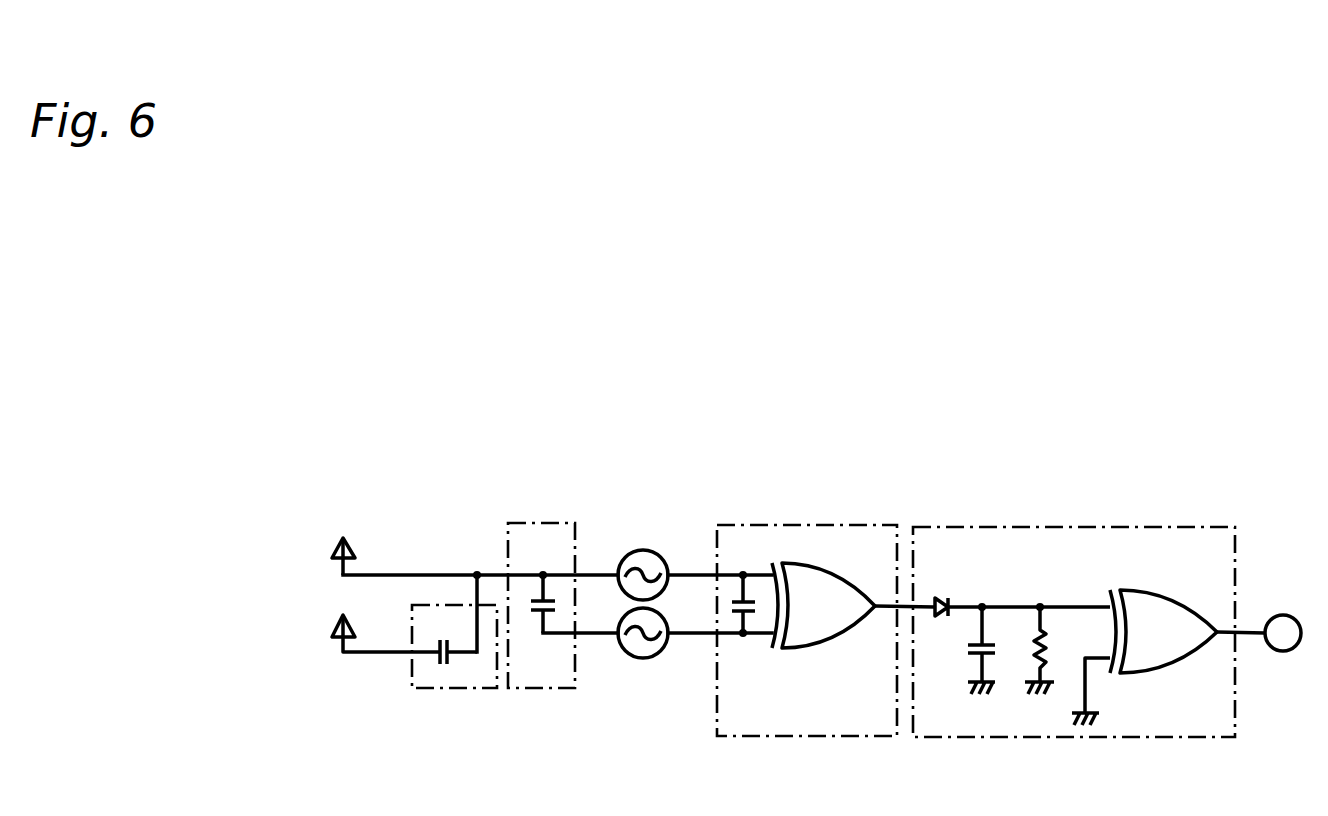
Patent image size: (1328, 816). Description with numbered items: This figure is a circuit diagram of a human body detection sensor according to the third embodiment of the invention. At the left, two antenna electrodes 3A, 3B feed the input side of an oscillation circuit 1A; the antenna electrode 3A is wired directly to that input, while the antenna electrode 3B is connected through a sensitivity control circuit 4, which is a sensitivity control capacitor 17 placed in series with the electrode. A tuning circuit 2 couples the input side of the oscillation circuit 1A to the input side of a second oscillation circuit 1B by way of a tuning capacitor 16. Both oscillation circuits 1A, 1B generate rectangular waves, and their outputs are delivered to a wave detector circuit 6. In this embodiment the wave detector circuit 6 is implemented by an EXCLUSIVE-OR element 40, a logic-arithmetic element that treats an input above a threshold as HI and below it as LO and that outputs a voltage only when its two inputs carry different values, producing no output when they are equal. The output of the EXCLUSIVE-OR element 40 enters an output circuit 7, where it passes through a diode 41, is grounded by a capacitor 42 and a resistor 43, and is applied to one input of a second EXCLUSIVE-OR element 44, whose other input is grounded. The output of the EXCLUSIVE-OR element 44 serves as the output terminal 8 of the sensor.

The oscillation circuit 1A is at (645, 550).
The oscillation circuit 1B is at (645, 659).
The tuning circuit 2 is at (527, 521).
The antenna electrode 3A is at (336, 547).
The antenna electrode 3B is at (337, 628).
The sensitivity control circuit 4 is at (447, 691).
The wave detector circuit 6 is at (762, 521).
The output circuit 7 is at (955, 522).
The output terminal 8 is at (1283, 614).
The tuning capacitor 16 is at (540, 614).
The sensitivity control capacitor 17 is at (437, 654).
The EXCLUSIVE-OR element 40 is at (828, 650).
The diode 41 is at (946, 598).
The capacitor 42 is at (972, 655).
The resistor 43 is at (1036, 648).
The EXCLUSIVE-OR element 44 is at (1186, 665).